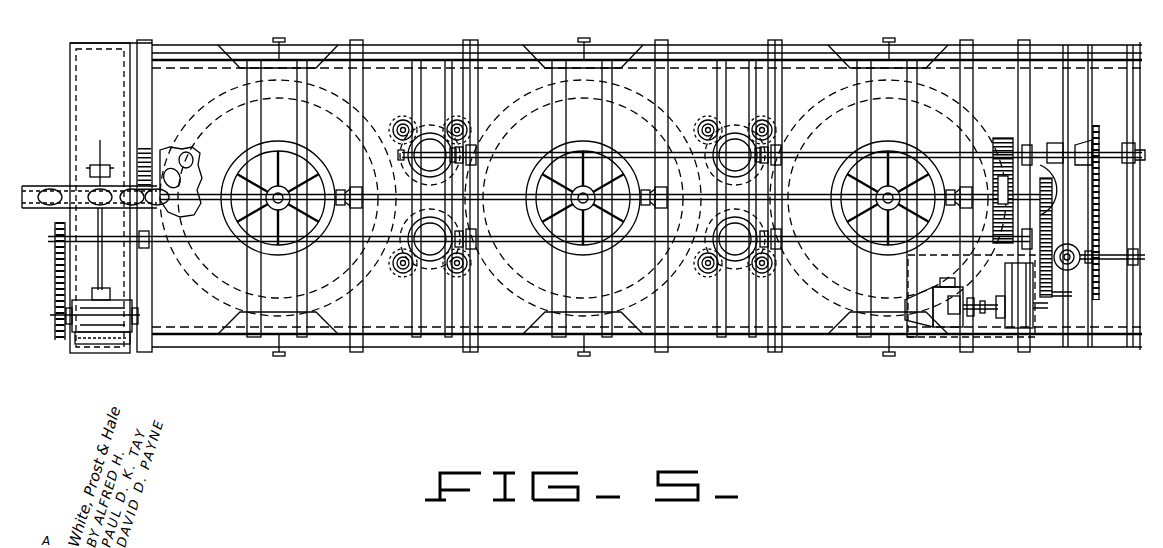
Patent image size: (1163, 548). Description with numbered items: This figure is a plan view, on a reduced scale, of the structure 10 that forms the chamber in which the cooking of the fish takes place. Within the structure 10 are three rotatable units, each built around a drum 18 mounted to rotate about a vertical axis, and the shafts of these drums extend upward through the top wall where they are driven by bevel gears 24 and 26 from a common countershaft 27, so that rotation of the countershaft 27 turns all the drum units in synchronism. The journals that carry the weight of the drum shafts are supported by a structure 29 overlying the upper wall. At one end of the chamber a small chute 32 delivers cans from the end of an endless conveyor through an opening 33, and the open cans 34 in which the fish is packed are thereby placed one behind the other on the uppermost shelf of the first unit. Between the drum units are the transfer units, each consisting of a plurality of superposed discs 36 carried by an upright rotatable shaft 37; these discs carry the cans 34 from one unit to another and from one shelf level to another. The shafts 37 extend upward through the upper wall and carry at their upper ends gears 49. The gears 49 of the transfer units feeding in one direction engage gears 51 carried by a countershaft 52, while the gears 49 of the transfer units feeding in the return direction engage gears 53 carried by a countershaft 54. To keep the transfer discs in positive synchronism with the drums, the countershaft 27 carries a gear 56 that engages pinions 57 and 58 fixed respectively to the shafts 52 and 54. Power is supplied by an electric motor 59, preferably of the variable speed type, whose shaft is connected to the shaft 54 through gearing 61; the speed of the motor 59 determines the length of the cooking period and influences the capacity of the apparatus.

The structure 10 is at (178, 66).
The drum 18 is at (377, 112).
The bevel gear 24 is at (276, 141).
The bevel gear 26 is at (340, 186).
The countershaft 27 is at (406, 200).
The structure 29 is at (244, 50).
The chute 32 is at (37, 185).
The opening 33 is at (147, 206).
The can 34 is at (50, 206).
The transfer disc 36 is at (410, 166).
The shaft 37 is at (403, 119).
The gear 49 is at (430, 133).
The gear 51 is at (459, 128).
The countershaft 52 is at (509, 152).
The gear 53 is at (470, 225).
The countershaft 54 is at (229, 243).
The gear 56 is at (1032, 158).
The pinion 57 is at (1001, 136).
The pinion 58 is at (1003, 258).
The electric motor 59 is at (948, 330).
The gearing 61 is at (1053, 278).